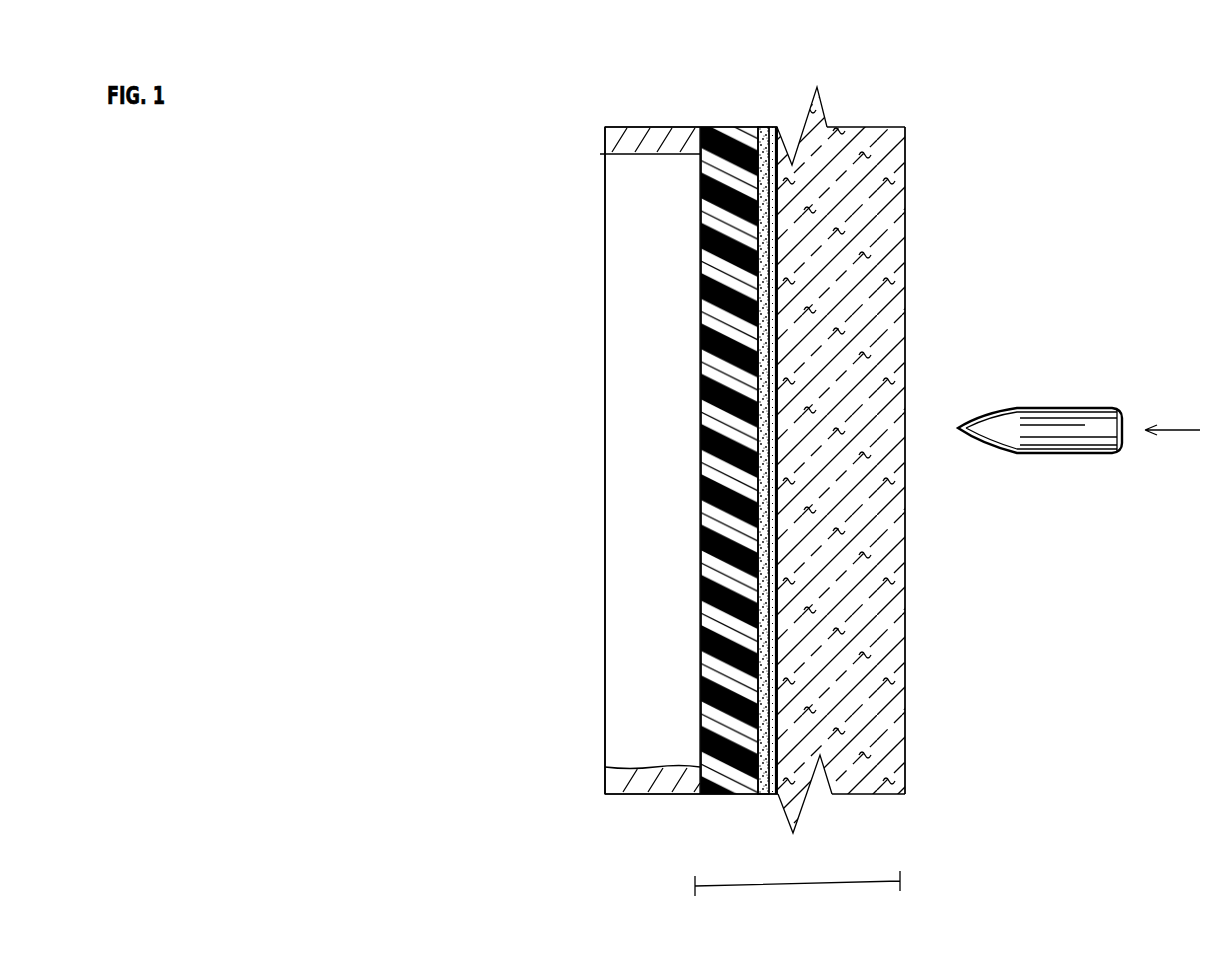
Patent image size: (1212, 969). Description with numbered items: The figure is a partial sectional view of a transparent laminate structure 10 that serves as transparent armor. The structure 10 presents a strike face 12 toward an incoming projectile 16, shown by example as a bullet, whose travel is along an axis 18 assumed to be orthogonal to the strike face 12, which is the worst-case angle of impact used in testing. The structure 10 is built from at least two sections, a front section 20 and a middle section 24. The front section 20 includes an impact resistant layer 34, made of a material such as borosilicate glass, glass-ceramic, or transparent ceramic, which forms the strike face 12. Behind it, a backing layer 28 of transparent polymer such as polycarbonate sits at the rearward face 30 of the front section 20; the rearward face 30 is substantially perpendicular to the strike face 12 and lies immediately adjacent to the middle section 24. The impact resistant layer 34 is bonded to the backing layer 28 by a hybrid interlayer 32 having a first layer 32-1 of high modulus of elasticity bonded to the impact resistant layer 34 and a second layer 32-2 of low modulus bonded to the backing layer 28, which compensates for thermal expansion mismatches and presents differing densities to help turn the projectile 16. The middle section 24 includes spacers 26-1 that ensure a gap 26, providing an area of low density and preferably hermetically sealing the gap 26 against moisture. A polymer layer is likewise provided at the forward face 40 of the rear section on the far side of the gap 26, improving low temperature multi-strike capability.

The transparent laminate structure 10 is at (1006, 186).
The strike face 12 is at (916, 246).
The projectile 16 is at (1070, 406).
The axis 18 is at (1172, 432).
The front section 20 is at (790, 891).
The middle section 24 is at (630, 824).
The gap 26 is at (650, 460).
The spacer 26-1 is at (650, 160).
The backing layer 28 is at (727, 126).
The rearward face 30 is at (691, 388).
The interlayer 32 is at (796, 430).
The first layer 32-1 is at (774, 796).
The second layer 32-2 is at (769, 126).
The impact resistant layer 34 is at (872, 126).
The forward face 40 is at (616, 442).